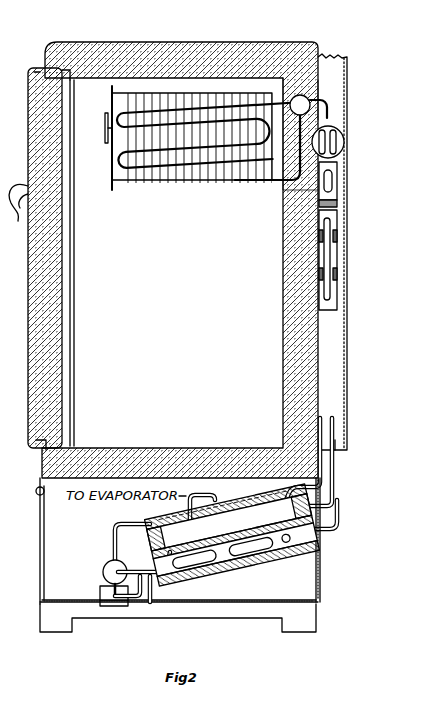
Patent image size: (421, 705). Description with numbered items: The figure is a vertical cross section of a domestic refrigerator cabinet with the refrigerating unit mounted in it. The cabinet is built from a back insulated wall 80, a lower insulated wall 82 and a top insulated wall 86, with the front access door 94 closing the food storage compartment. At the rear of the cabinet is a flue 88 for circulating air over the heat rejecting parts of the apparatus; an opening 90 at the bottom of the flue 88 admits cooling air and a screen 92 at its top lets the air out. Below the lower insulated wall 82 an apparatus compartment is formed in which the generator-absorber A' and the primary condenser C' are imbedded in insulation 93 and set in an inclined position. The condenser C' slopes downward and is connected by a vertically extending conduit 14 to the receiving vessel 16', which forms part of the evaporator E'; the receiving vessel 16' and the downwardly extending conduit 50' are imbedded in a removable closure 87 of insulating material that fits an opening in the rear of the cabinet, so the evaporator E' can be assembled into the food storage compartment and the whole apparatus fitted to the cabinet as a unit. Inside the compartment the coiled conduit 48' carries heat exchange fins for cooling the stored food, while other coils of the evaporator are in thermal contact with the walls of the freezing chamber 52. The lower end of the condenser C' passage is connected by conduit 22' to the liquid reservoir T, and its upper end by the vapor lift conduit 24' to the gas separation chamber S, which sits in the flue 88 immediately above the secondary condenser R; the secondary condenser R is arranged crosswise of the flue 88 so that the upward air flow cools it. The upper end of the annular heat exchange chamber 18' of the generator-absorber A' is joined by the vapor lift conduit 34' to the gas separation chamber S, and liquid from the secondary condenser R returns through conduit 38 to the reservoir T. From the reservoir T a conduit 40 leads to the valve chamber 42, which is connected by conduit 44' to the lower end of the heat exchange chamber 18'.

The top insulated wall 86 is at (180, 46).
The screen 92 is at (325, 57).
The flue 88 is at (338, 98).
The vertically extending conduit 14 is at (330, 110).
The downwardly extending conduit 50' is at (307, 144).
The receiving vessel 16' is at (301, 105).
The gas separation chamber S is at (344, 143).
The secondary condenser R is at (328, 248).
The back insulated wall 80 is at (292, 275).
The door 94 is at (36, 296).
The coiled conduit 48' is at (186, 139).
The freezing chamber 52 is at (132, 184).
The evaporator E' is at (186, 151).
The removable closure 87 is at (282, 193).
The lower insulated wall 82 is at (111, 449).
The opening 90 is at (344, 452).
The vapor lift conduit 34' is at (329, 459).
The vapor lift conduit 24' is at (332, 473).
The insulation 93 is at (322, 546).
The conduit 38 is at (112, 528).
The liquid reservoir T is at (106, 562).
The annular heat exchange chamber 18' is at (144, 556).
The generator-absorber A' is at (235, 547).
The primary condenser C' is at (238, 566).
The conduit 40 is at (104, 586).
The valve chamber 42 is at (108, 606).
The conduit 44' is at (126, 605).
The conduit 22' is at (155, 608).